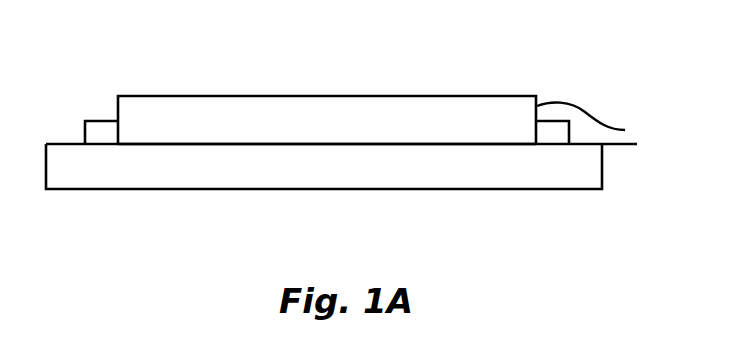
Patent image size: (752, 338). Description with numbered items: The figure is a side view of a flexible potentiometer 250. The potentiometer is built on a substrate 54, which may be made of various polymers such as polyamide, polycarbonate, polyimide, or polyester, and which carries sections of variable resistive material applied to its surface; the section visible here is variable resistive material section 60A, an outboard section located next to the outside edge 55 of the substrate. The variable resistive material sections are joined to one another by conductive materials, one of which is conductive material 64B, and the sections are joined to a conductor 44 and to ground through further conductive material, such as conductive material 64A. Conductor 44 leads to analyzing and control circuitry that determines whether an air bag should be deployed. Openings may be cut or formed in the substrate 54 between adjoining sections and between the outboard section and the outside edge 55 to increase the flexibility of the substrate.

The flexible potentiometer 250 is at (222, 197).
The substrate 54 is at (407, 173).
The variable resistive material section 60A is at (355, 115).
The outside edge 55 is at (453, 143).
The conductive material 64A is at (553, 135).
The conductive material 64B is at (94, 138).
The conductor 44 is at (585, 132).